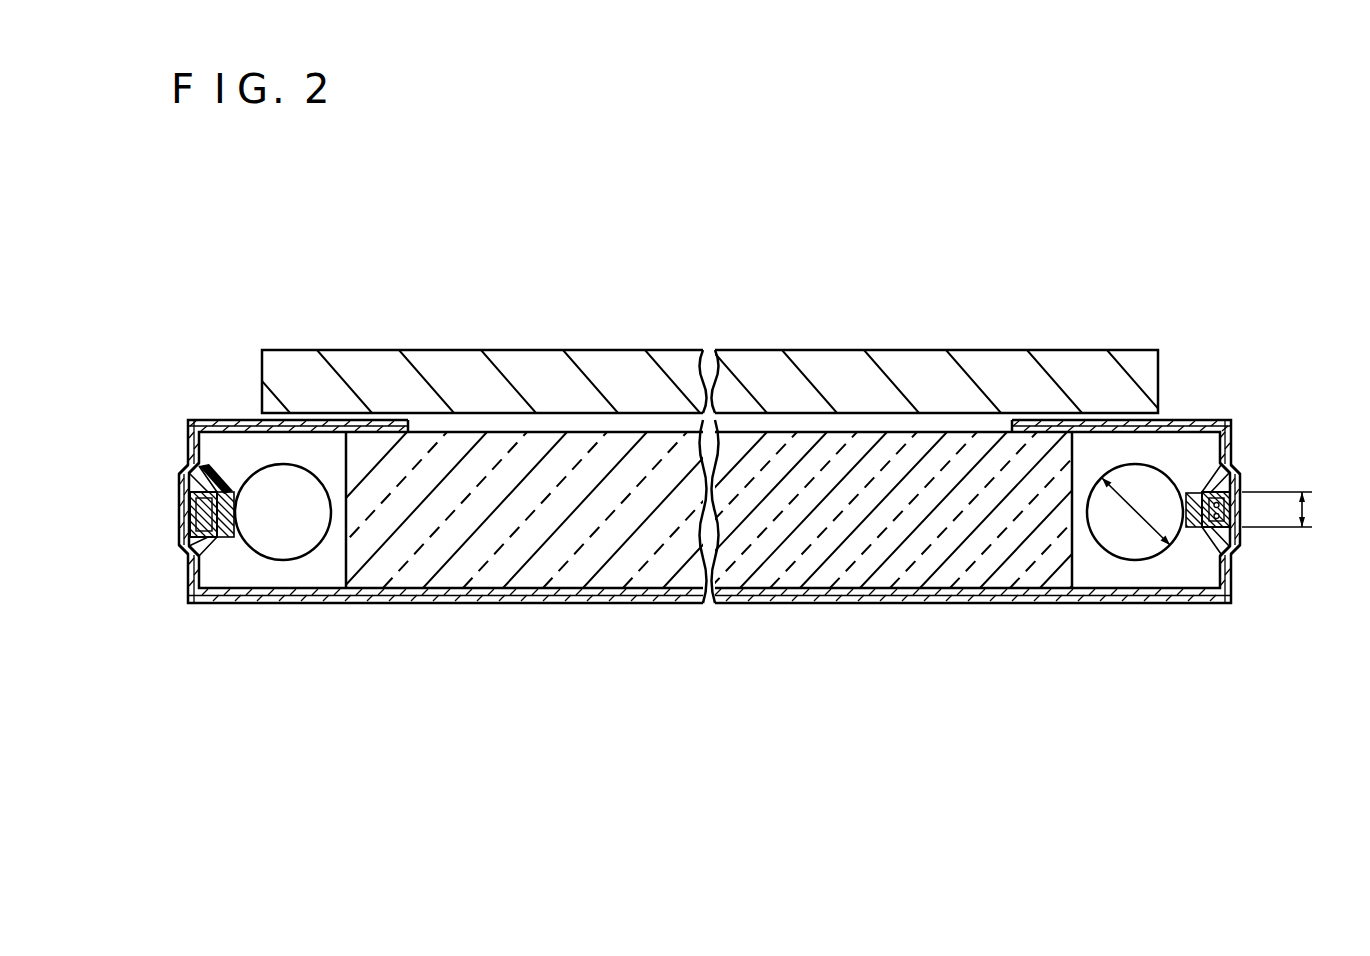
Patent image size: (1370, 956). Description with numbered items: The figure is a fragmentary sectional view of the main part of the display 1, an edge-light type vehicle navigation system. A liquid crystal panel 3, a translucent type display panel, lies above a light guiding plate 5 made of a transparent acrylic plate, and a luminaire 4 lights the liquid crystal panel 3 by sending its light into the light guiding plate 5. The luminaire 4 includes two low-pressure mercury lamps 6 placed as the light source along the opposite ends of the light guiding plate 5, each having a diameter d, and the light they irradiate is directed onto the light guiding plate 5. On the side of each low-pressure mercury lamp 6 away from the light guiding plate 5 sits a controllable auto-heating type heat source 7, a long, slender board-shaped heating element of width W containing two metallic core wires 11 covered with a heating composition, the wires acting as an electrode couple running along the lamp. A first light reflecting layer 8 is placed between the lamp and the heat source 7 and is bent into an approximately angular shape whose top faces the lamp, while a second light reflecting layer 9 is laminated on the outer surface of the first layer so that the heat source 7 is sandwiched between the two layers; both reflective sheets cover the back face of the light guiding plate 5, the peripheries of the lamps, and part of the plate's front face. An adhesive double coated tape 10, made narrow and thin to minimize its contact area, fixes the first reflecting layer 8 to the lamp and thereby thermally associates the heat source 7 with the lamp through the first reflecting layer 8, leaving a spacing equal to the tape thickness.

The display 1 is at (1270, 292).
The liquid crystal panel 3 is at (1002, 365).
The luminaire 4 is at (1240, 610).
The light guiding plate 5 is at (915, 572).
The low-pressure mercury lamp 6 is at (266, 470).
The controllable auto-heating type heat source 7 is at (190, 510).
The first light reflecting layer 8 is at (1145, 588).
The second light reflecting layer 9 is at (1175, 603).
The adhesive double coated tape 10 is at (229, 490).
The metallic core wire 11 is at (185, 472).